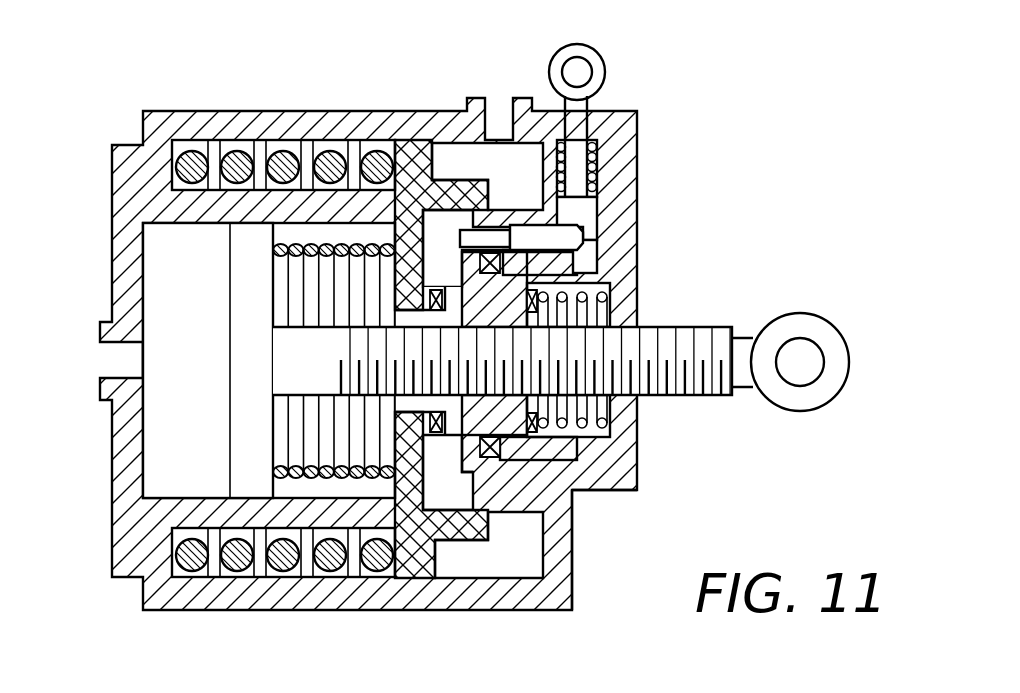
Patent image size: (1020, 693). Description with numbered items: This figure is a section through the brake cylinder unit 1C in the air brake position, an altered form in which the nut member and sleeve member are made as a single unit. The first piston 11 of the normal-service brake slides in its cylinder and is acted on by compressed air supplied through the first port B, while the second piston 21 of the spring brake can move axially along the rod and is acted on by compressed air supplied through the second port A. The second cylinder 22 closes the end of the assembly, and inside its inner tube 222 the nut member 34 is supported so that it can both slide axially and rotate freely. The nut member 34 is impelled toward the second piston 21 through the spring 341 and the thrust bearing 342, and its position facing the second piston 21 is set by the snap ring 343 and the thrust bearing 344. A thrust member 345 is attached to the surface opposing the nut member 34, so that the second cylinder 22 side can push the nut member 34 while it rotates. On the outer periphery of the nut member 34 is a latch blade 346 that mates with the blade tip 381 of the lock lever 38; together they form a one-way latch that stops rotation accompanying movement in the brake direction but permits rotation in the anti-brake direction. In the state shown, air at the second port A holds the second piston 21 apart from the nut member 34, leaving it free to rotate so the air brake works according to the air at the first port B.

The first piston 11 is at (243, 283).
The second piston 21 is at (414, 155).
The second cylinder 22 is at (578, 600).
The inner tube 222 is at (545, 478).
The nut member 34 is at (587, 444).
The spring 341 is at (600, 300).
The thrust bearing 342 is at (550, 414).
The snap ring 343 is at (482, 450).
The thrust bearing 344 is at (489, 545).
The thrust member 345 is at (435, 445).
The latch blade 346 is at (572, 262).
The lock lever 38 is at (614, 63).
The blade tip 381 is at (600, 262).
The brake cylinder unit 1C is at (745, 100).
The second port A is at (499, 82).
The first port B is at (82, 362).